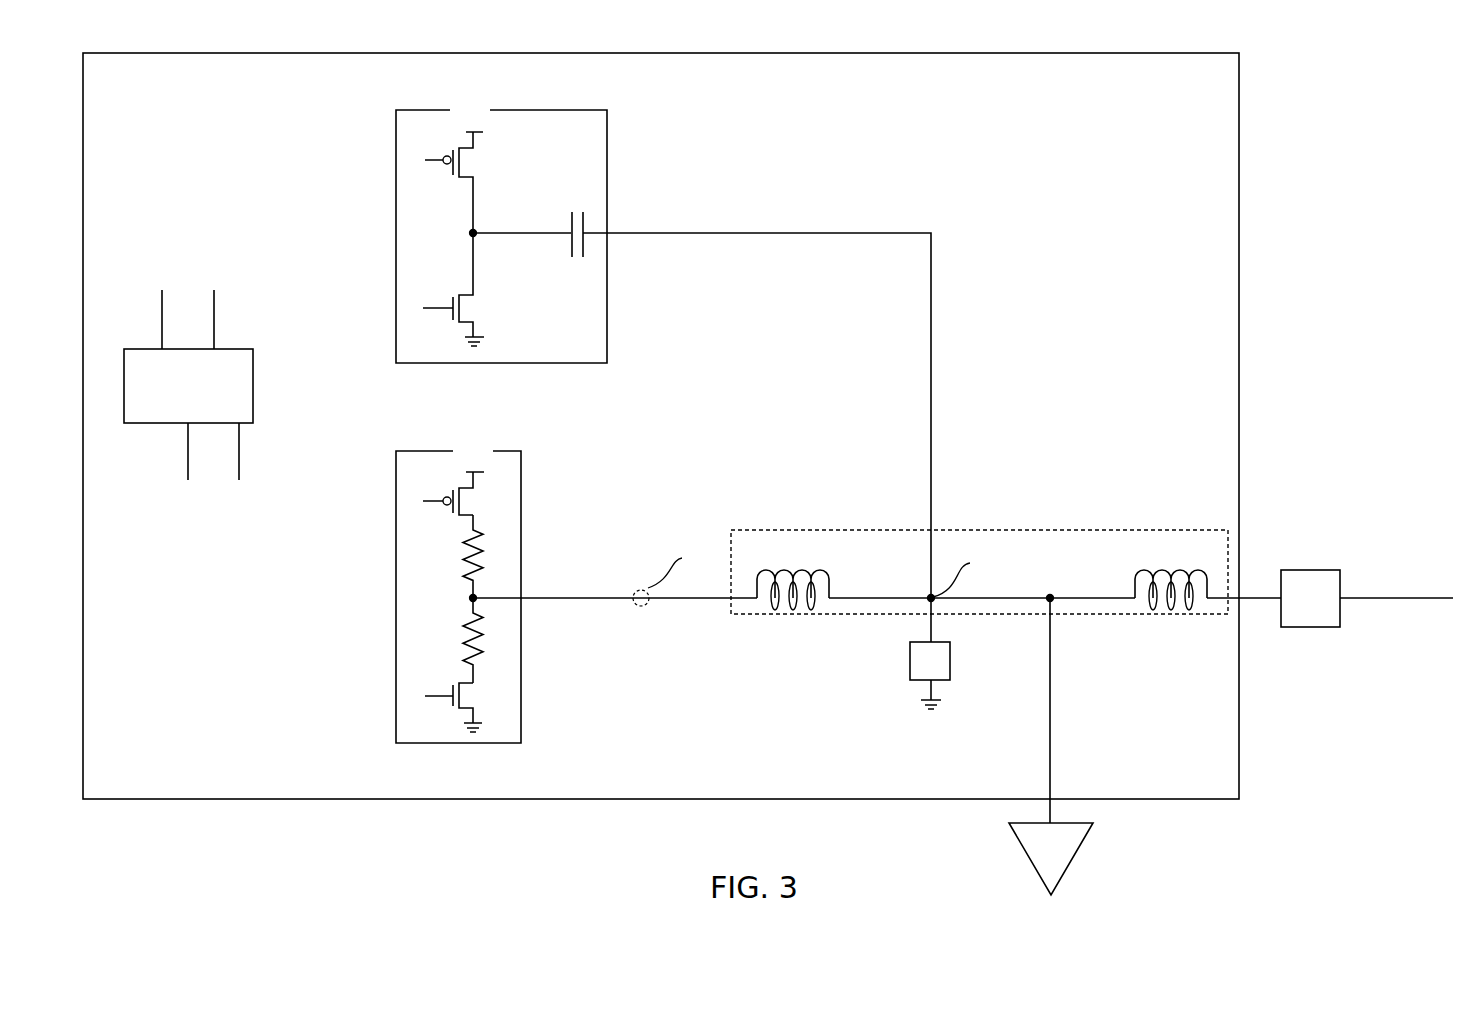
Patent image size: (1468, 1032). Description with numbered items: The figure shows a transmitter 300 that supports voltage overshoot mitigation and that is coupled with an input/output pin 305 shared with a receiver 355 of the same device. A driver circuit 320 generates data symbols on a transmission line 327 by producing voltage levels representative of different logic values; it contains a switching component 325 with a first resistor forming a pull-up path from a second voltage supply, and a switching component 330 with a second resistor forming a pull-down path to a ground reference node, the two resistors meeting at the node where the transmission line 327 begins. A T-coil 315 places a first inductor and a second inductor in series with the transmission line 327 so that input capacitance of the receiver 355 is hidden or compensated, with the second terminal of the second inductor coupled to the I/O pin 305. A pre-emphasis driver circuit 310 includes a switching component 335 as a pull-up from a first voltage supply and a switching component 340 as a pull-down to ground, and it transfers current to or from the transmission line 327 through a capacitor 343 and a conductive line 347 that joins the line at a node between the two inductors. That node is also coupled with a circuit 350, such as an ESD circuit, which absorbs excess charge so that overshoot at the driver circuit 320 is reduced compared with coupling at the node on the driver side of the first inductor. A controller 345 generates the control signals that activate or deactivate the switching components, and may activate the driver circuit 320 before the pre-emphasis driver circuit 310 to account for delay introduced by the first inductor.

The transmitter 300 is at (661, 426).
The input/output (I/O) pin 305 is at (1338, 538).
The pre-emphasis driver circuit 310 is at (396, 224).
The T-coil 315 is at (1077, 497).
The driver circuit 320 is at (371, 603).
The switching component 325 is at (472, 500).
The transmission line 327 is at (710, 603).
The switching component 330 is at (478, 695).
The switching component 335 is at (477, 160).
The switching component 340 is at (483, 307).
The capacitor 343 is at (578, 212).
The controller 345 is at (202, 381).
The conductive line 347 is at (931, 272).
The circuit 350 is at (910, 662).
The receiver 355 is at (1078, 853).